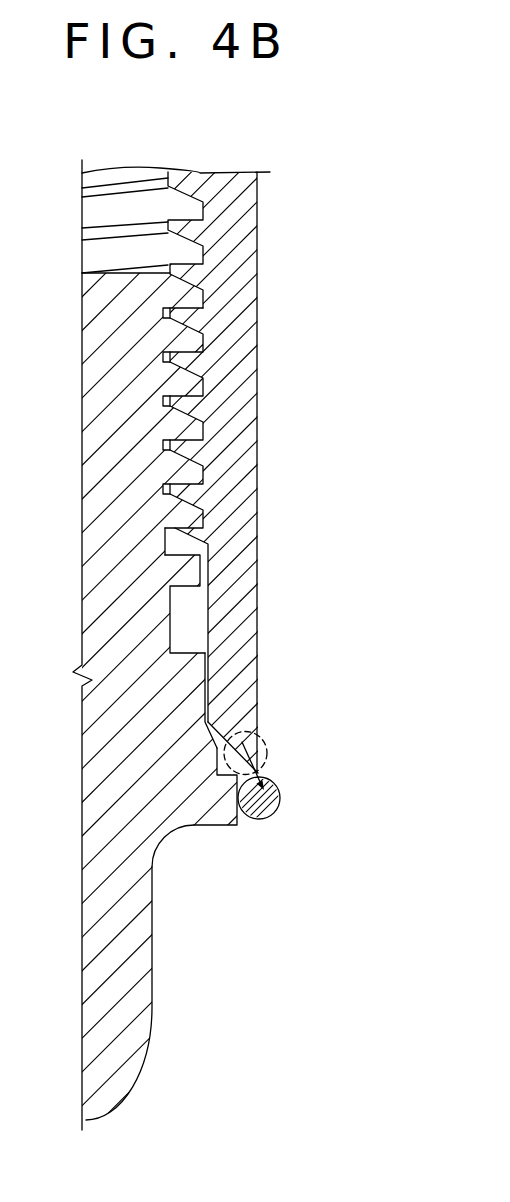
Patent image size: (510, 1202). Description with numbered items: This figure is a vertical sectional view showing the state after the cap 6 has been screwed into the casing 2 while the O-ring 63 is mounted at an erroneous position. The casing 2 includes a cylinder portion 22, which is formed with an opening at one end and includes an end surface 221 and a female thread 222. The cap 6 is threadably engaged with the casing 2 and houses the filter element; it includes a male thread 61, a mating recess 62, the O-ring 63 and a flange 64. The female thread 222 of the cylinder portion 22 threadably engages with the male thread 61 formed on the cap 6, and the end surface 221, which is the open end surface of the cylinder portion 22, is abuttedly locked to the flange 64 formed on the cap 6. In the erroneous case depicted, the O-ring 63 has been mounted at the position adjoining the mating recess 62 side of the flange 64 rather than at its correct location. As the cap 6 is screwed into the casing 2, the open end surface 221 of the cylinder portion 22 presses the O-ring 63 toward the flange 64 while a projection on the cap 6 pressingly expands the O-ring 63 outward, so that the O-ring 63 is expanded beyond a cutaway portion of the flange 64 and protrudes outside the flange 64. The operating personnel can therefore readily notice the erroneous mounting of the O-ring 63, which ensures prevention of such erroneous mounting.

The casing 2 is at (262, 203).
The cylinder portion 22 is at (237, 355).
The female thread 222 is at (185, 230).
The end surface 221 is at (260, 817).
The cap 6 is at (125, 443).
The male thread 61 is at (183, 380).
The mating recess 62 is at (192, 587).
The O-ring 63 is at (277, 798).
The flange 64 is at (223, 798).